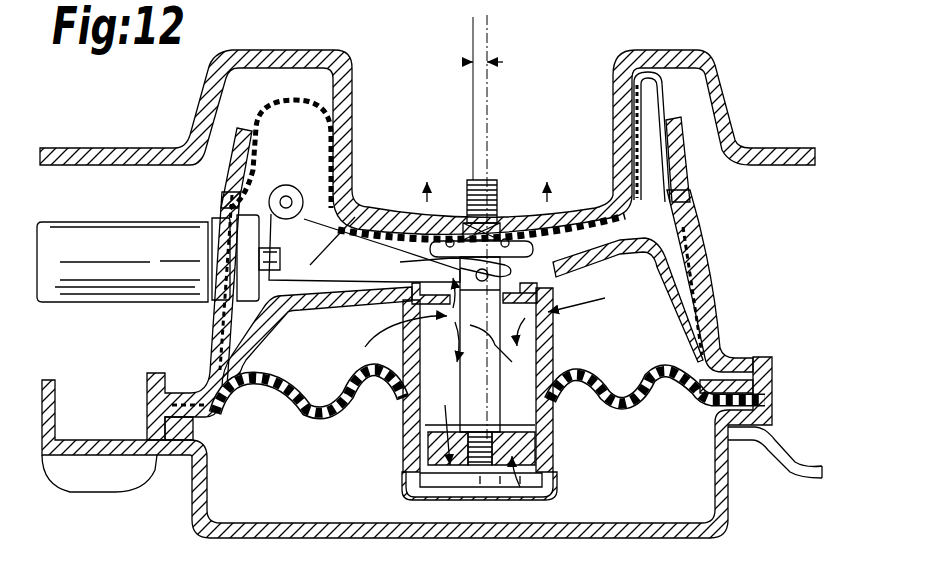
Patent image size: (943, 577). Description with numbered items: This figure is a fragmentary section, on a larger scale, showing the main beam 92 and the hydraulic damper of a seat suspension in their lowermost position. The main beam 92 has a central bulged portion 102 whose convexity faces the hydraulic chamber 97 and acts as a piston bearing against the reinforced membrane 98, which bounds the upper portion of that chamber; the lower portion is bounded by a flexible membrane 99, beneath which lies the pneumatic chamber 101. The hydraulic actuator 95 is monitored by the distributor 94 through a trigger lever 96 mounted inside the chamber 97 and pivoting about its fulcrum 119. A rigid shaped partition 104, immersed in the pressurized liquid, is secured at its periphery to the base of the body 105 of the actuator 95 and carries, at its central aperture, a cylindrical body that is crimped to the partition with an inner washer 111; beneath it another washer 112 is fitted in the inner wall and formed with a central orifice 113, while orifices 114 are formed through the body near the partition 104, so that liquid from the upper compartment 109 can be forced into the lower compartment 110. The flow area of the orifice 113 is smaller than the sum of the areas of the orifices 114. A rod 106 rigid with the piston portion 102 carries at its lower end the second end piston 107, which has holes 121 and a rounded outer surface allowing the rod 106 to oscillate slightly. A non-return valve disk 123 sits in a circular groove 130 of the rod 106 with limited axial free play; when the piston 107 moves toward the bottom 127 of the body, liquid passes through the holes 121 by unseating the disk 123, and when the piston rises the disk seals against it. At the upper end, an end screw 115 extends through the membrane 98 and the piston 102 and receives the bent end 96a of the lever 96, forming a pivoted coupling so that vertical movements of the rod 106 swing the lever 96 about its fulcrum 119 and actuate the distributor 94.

The main beam 92 is at (742, 98).
The distributor 94 is at (78, 232).
The hydraulic actuator 95 is at (713, 265).
The trigger lever 96 is at (368, 200).
The end of control lever 96a is at (433, 246).
The hydraulic chamber 97 is at (243, 305).
The reinforced membrane 98 is at (668, 187).
The flexible membrane 99 is at (308, 400).
The pneumatic chamber 101 is at (313, 513).
The central bulged portion 102 is at (388, 207).
The rigid shaped partition 104 is at (320, 305).
The body of actuator 105 is at (713, 296).
The rod 106 is at (540, 372).
The second end piston 107 is at (540, 497).
The upper compartment 109 is at (268, 155).
The lower compartment 110 is at (290, 384).
The inner washer 111 is at (548, 275).
The washer 112 is at (412, 309).
The central orifice 113 is at (505, 353).
The orifices 114 is at (483, 333).
The end screw 115 is at (506, 192).
The fulcrum 119 is at (291, 195).
The holes 121 is at (443, 497).
The non-return valve disk 123 is at (490, 392).
The bottom of body 127 is at (472, 478).
The circular groove 130 is at (447, 416).